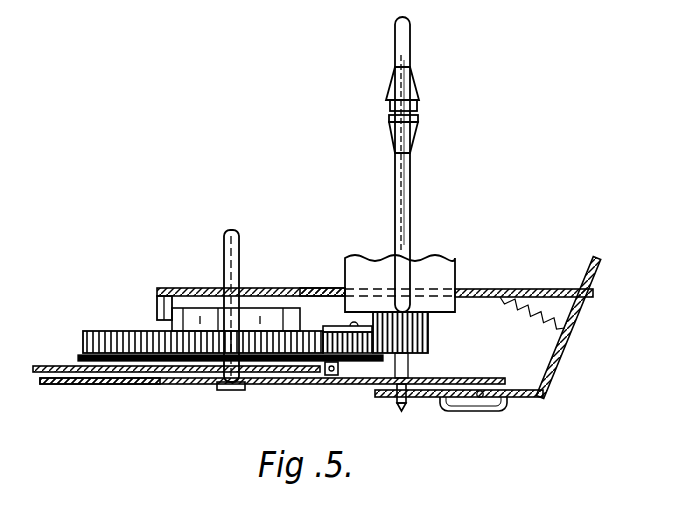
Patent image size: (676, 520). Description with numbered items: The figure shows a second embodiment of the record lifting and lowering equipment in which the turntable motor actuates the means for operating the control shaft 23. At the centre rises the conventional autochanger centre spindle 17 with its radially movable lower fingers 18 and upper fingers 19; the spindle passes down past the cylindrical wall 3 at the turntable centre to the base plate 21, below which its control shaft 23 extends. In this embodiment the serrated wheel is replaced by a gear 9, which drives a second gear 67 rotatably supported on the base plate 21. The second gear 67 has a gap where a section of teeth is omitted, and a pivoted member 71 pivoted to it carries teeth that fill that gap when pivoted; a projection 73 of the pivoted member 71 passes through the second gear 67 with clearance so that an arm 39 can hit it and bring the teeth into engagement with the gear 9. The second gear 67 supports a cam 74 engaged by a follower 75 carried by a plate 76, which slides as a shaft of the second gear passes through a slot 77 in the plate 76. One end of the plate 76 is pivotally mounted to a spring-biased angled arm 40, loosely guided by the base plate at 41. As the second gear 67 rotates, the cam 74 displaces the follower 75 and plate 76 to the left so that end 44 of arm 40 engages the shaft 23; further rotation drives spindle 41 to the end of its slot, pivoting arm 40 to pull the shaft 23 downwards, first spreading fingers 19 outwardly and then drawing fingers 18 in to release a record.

The cylindrical wall 3 is at (380, 268).
The gear 9 is at (430, 328).
The autochanger centre spindle 17 is at (392, 184).
The lower fingers 18 is at (389, 133).
The upper fingers 19 is at (391, 101).
The base plate 21 is at (170, 385).
The control shaft 23 is at (402, 412).
The arm 39 is at (50, 380).
The angled arm 40 is at (580, 318).
The guide 41 is at (481, 398).
The end of arm 44 is at (378, 392).
The second gear 67 is at (101, 331).
The pivoted member 71 is at (332, 325).
The projection 73 is at (328, 376).
The cam 74 is at (195, 310).
The follower 75 is at (160, 302).
The plate 76 is at (306, 287).
The slot 77 is at (264, 286).